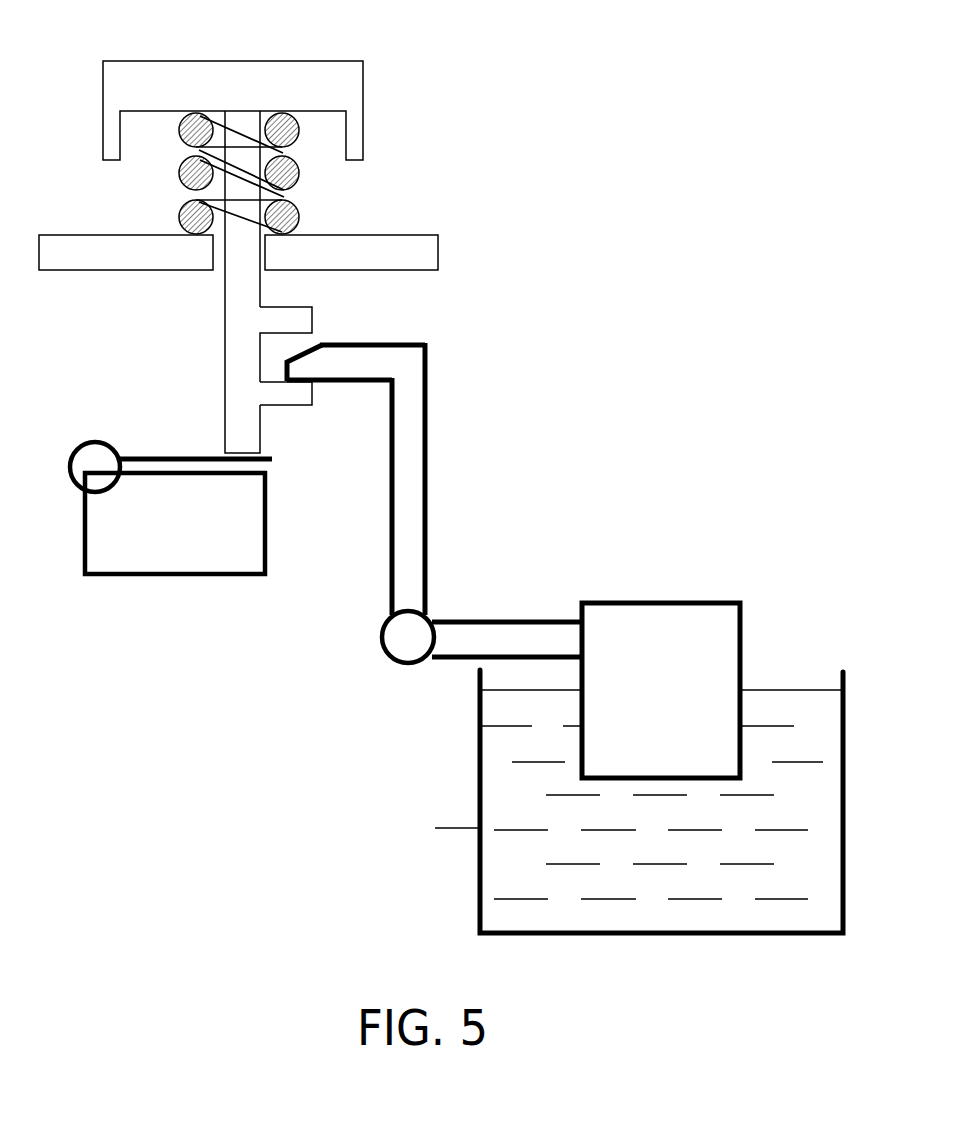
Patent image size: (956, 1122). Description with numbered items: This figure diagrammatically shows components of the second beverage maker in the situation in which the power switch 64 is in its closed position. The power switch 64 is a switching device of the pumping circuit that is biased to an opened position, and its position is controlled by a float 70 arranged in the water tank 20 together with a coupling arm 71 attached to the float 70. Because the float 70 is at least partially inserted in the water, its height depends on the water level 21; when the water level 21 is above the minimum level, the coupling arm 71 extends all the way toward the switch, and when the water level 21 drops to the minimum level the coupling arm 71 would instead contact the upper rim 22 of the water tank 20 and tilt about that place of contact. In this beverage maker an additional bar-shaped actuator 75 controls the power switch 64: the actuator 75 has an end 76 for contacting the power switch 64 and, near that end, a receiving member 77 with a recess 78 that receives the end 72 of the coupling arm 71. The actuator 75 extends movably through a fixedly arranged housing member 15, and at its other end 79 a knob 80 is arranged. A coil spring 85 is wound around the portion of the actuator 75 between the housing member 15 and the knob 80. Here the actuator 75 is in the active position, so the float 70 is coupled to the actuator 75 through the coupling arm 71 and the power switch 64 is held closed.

The housing member 15 is at (428, 250).
The water tank 20 is at (488, 752).
The water level 21 is at (797, 690).
The upper rim of the water tank 22 is at (475, 670).
The power switch 64 is at (154, 453).
The float 70 is at (646, 694).
The coupling arm 71 is at (415, 484).
The end of the coupling arm 72 is at (362, 368).
The bar-shaped actuator 75 is at (250, 427).
The end of the actuator 76 is at (240, 451).
The receiving member 77 is at (302, 318).
The recess 78 is at (315, 340).
The other end of the actuator 79 is at (243, 117).
The knob 80 is at (316, 73).
The coil spring 85 is at (292, 215).